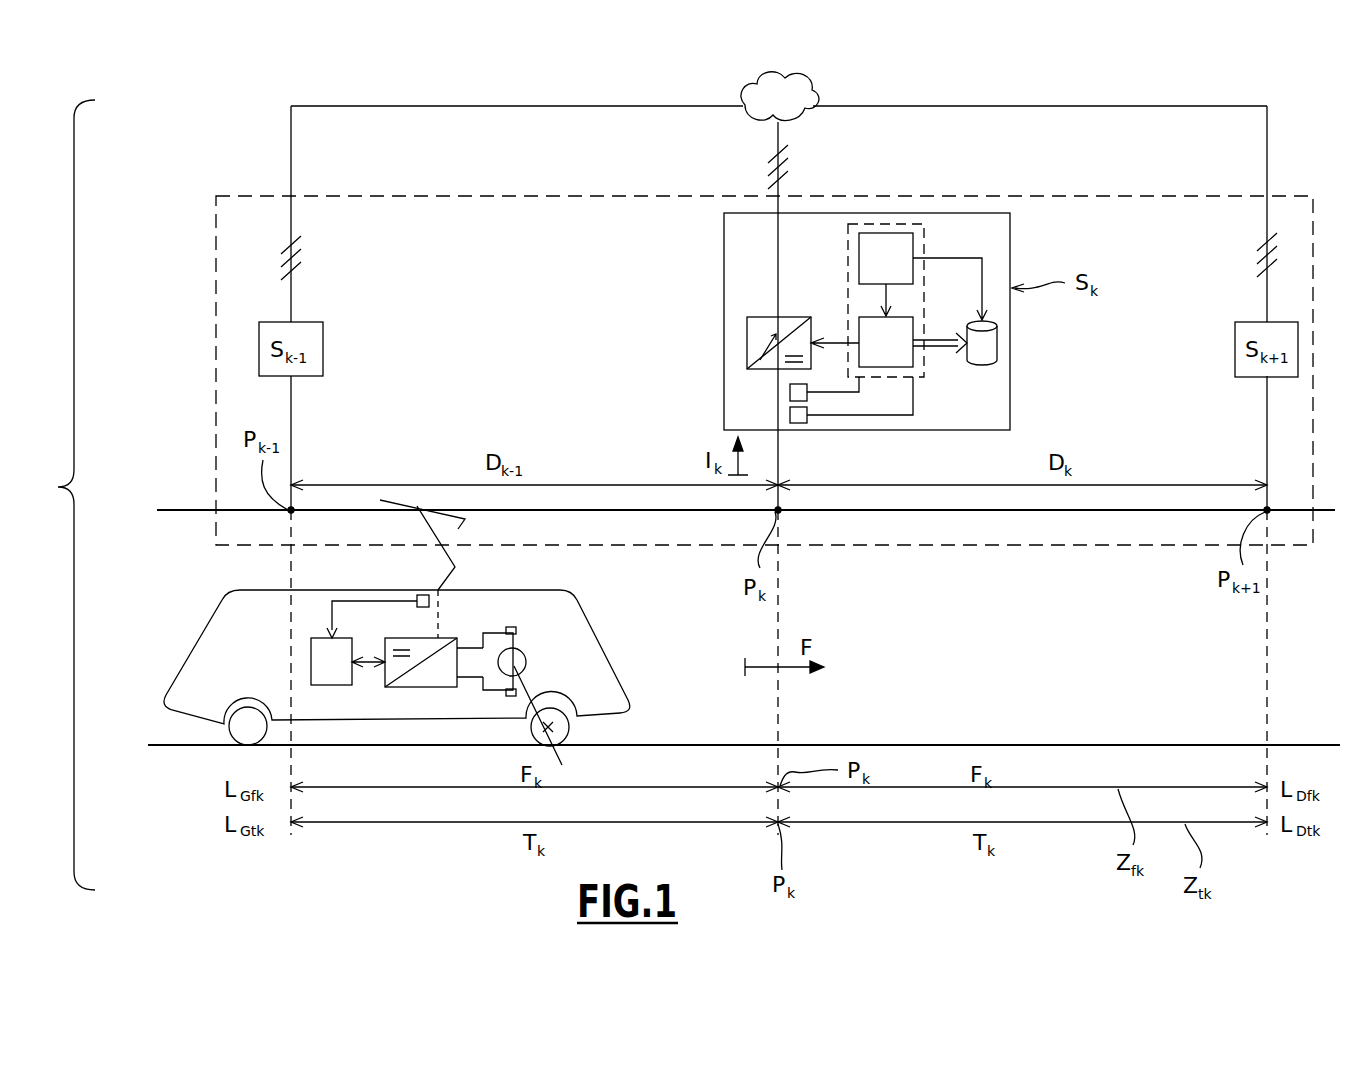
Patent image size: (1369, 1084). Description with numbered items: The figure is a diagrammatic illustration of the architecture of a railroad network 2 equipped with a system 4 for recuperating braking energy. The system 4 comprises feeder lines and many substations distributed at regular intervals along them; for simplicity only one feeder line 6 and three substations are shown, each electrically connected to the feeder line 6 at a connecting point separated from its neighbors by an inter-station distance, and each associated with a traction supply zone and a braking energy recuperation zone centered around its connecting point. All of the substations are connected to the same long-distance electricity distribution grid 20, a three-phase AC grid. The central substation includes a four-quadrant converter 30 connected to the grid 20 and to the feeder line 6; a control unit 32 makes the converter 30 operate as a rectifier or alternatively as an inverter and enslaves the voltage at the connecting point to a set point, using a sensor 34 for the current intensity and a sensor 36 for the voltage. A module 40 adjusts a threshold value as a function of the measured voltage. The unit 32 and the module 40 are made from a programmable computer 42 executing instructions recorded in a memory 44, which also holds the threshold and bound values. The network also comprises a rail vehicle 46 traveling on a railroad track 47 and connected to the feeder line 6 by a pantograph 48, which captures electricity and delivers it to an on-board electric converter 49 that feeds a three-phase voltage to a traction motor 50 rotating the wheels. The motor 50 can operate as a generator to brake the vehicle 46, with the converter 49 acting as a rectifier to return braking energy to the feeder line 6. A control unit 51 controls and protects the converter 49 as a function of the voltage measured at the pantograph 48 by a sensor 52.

The railroad network 2 is at (76, 495).
The system for recuperating braking energy 4 is at (253, 185).
The feeder line 6 is at (1115, 512).
The long-distance electricity distribution grid 20 is at (792, 109).
The four-quadrant converter 30 is at (747, 345).
The control unit 32 is at (900, 353).
The current sensor 34 is at (790, 392).
The voltage sensor 36 is at (798, 423).
The threshold adjusting module 40 is at (900, 270).
The programmable computer 42 is at (884, 210).
The memory 44 is at (997, 345).
The rail vehicle 46 is at (190, 643).
The railroad track 47 is at (1190, 743).
The pantograph 48 is at (424, 522).
The electric converter 49 is at (415, 680).
The traction motor 50 is at (524, 660).
The control unit 51 is at (311, 655).
The voltage sensor 52 is at (420, 595).